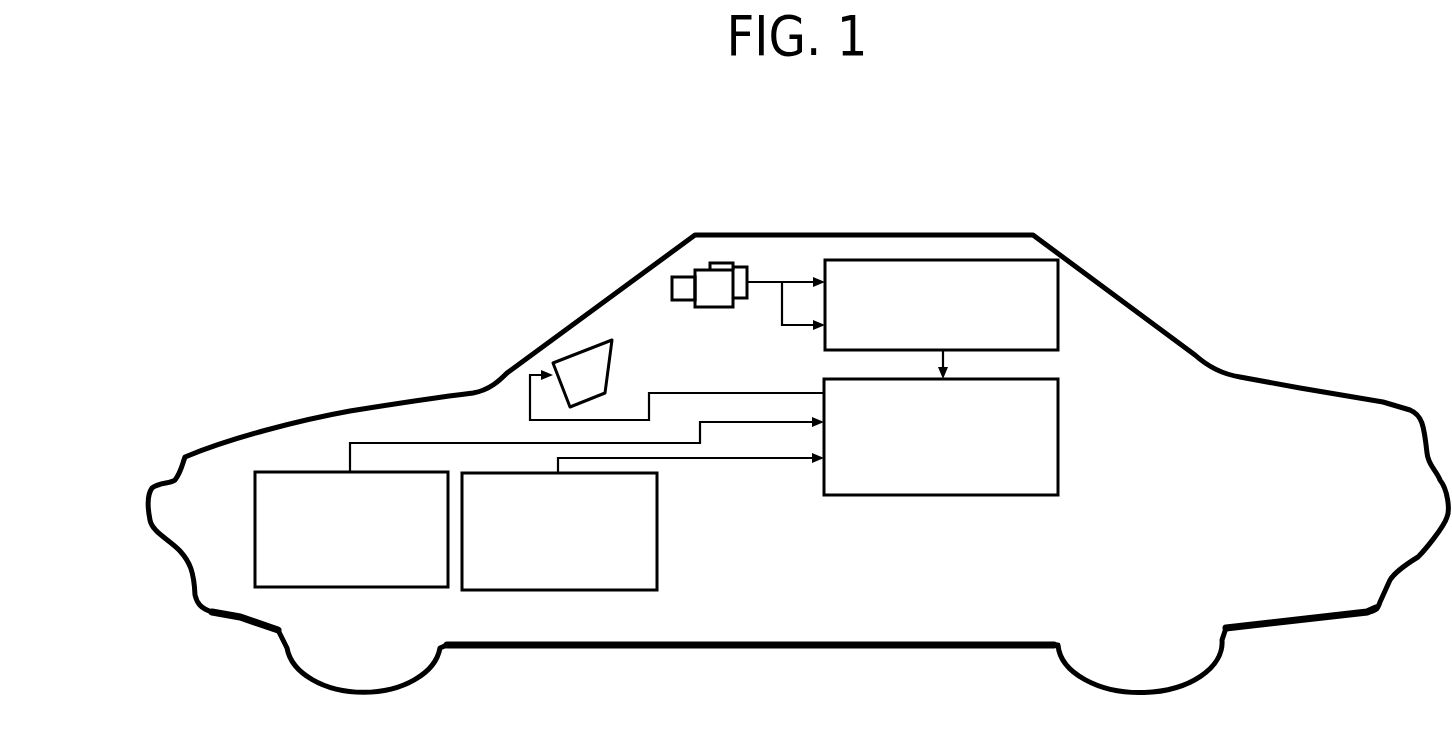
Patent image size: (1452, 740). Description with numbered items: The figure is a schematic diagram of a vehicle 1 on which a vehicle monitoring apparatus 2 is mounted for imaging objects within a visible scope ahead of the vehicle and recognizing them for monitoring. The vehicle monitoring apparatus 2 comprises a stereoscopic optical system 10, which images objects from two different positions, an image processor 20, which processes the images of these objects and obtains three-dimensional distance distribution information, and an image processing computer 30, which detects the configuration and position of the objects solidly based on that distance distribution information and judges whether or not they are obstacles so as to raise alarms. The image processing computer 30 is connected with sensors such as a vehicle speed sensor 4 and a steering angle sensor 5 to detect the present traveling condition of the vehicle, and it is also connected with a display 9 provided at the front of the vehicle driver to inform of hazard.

The vehicle 1 is at (1140, 304).
The vehicle monitoring apparatus 2 is at (786, 248).
The vehicle speed sensor 4 is at (403, 590).
The steering angle sensor 5 is at (582, 590).
The display 9 is at (583, 345).
The stereoscopic optical system 10 is at (704, 248).
The image processor 20 is at (971, 260).
The image processing computer 30 is at (933, 495).